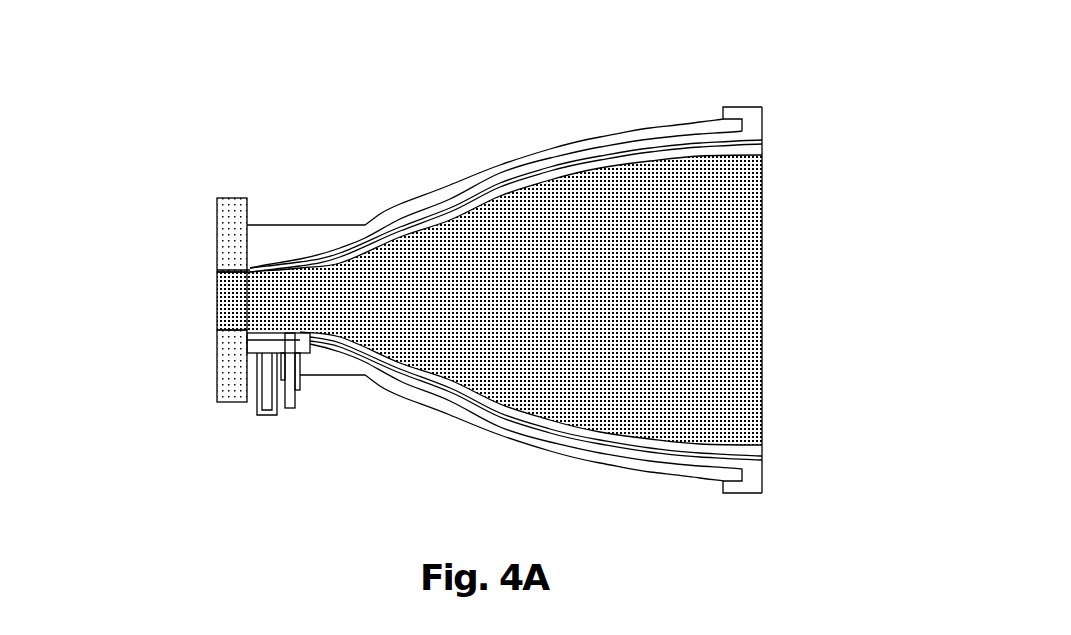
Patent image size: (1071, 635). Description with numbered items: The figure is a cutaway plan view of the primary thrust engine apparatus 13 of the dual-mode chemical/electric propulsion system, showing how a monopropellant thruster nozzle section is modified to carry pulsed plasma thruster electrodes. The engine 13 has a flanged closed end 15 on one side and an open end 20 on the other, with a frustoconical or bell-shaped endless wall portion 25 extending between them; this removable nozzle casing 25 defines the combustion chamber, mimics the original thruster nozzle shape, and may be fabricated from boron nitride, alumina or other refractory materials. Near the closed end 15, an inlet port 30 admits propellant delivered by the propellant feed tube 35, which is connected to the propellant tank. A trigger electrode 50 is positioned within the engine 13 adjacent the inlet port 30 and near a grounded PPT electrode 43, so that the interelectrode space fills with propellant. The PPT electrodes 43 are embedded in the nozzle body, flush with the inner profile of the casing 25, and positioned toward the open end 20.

The primary thrust engine apparatus 13 is at (489, 270).
The flanged or otherwise closed end 15 is at (193, 260).
The open end 20 is at (788, 213).
The frustoconical or bell shaped endless wall portion 25 is at (408, 194).
The inlet port 30 is at (254, 449).
The propellant feed tube 35 is at (252, 369).
The electrodes 43 is at (680, 153).
The trigger electrode 50 is at (296, 403).